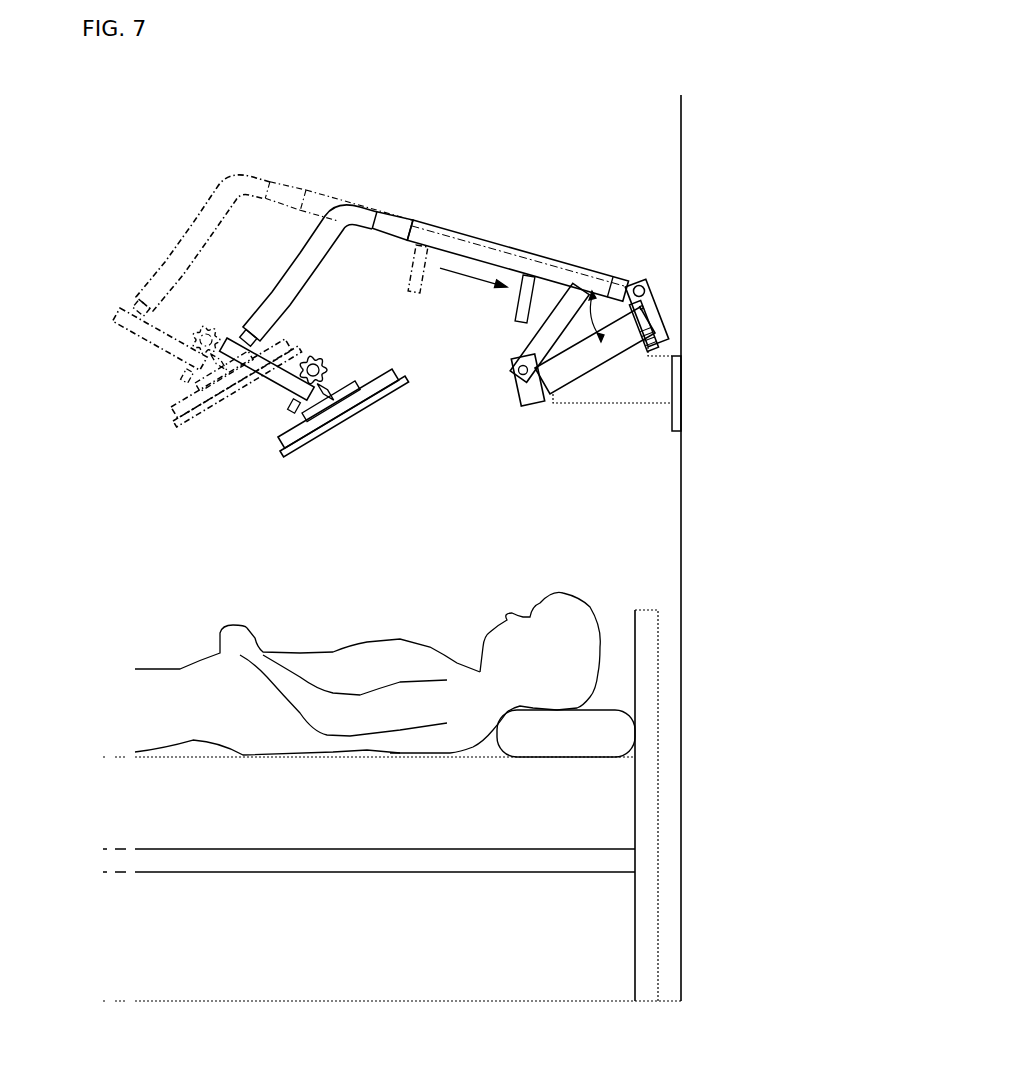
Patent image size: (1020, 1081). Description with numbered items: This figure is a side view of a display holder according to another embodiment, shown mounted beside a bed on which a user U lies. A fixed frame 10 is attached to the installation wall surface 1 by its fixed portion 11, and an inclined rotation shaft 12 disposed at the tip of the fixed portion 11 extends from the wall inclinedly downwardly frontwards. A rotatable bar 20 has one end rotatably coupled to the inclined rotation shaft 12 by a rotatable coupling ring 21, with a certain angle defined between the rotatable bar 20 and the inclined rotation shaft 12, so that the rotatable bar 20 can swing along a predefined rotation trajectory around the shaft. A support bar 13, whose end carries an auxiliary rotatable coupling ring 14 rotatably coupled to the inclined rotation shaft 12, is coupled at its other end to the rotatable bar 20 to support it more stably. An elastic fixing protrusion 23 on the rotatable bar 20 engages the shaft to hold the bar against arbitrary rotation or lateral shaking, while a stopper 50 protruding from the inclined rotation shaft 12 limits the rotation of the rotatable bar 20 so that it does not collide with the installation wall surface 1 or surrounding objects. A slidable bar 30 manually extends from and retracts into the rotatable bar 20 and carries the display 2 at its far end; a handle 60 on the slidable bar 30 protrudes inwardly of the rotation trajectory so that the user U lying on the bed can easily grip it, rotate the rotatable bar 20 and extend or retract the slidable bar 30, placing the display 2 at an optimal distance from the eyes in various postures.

The installation wall surface 1 is at (681, 178).
The display 2 is at (321, 437).
The fixed frame 10 is at (596, 351).
The fixed portion 11 is at (681, 391).
The inclined rotation shaft 12 is at (575, 381).
The support bar 13 is at (535, 344).
The auxiliary rotatable coupling ring 14 is at (527, 389).
The rotatable bar 20 is at (472, 237).
The rotatable coupling ring 21 is at (661, 308).
The elastic fixing protrusion 23 is at (612, 293).
The slidable bar 30 is at (299, 257).
The stopper 50 is at (658, 340).
The handle 60 is at (522, 304).
The user U is at (338, 652).